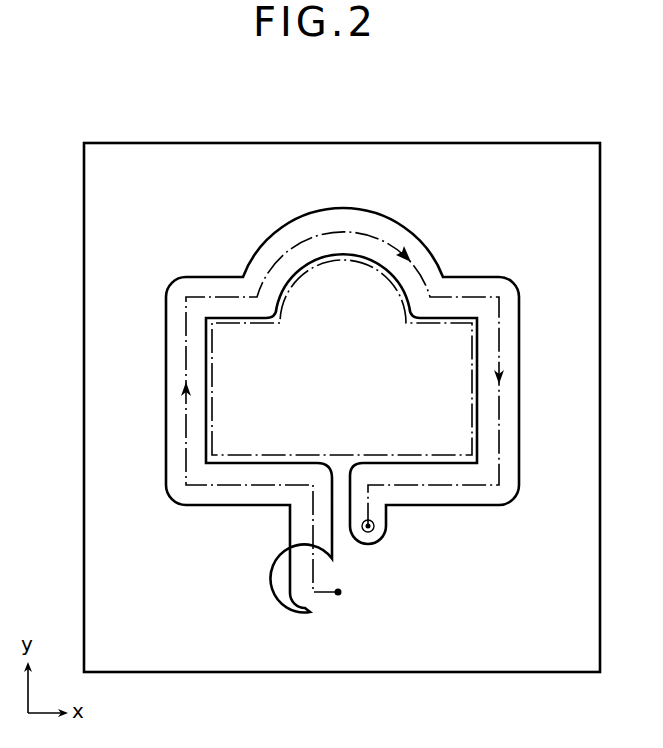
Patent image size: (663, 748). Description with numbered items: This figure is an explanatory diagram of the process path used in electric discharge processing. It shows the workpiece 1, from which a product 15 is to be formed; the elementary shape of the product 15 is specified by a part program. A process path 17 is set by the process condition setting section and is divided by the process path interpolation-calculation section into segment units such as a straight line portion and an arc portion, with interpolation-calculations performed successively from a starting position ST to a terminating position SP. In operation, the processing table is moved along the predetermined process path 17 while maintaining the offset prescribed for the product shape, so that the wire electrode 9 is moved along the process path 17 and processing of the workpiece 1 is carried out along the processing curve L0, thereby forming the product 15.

The workpiece 1 is at (592, 199).
The process path 17 is at (259, 486).
The processing curve L0 is at (519, 305).
The product 15 is at (212, 422).
The starting position ST is at (338, 592).
The terminating position SP is at (368, 526).
The wire electrode 9 is at (374, 526).